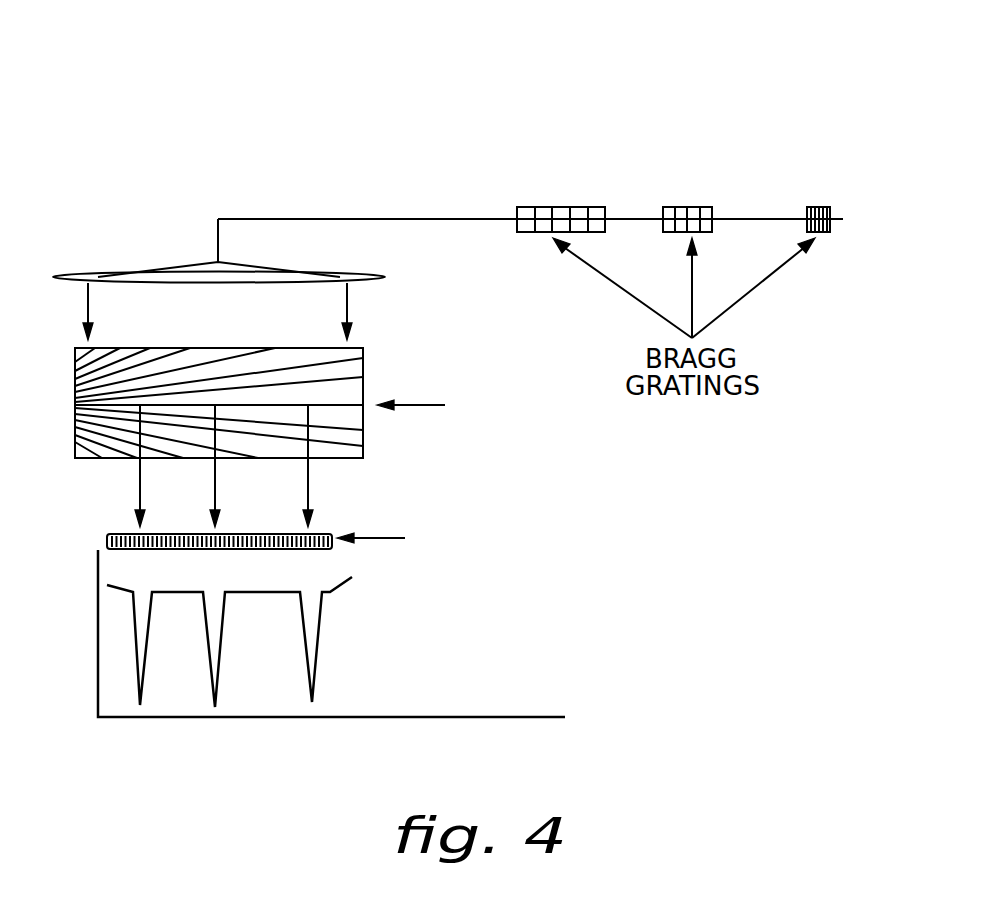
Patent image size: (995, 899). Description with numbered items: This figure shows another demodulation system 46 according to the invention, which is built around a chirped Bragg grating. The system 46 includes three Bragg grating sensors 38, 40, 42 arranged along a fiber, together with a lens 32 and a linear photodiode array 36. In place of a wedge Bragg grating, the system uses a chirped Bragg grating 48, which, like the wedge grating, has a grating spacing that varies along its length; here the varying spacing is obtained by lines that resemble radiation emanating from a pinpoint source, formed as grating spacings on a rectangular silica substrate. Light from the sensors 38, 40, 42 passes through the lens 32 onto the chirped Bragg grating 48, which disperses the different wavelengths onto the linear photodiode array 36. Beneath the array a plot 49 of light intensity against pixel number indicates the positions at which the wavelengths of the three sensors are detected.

The modulation system 46 is at (183, 146).
The lens 32 is at (385, 276).
The chirped Bragg grating 48 is at (363, 452).
The linear photodiode array 36 is at (332, 549).
The light intensity vs pixel number spectrum 49 is at (350, 652).
The sensor 38 is at (576, 207).
The sensor 40 is at (706, 207).
The sensor 42 is at (825, 207).